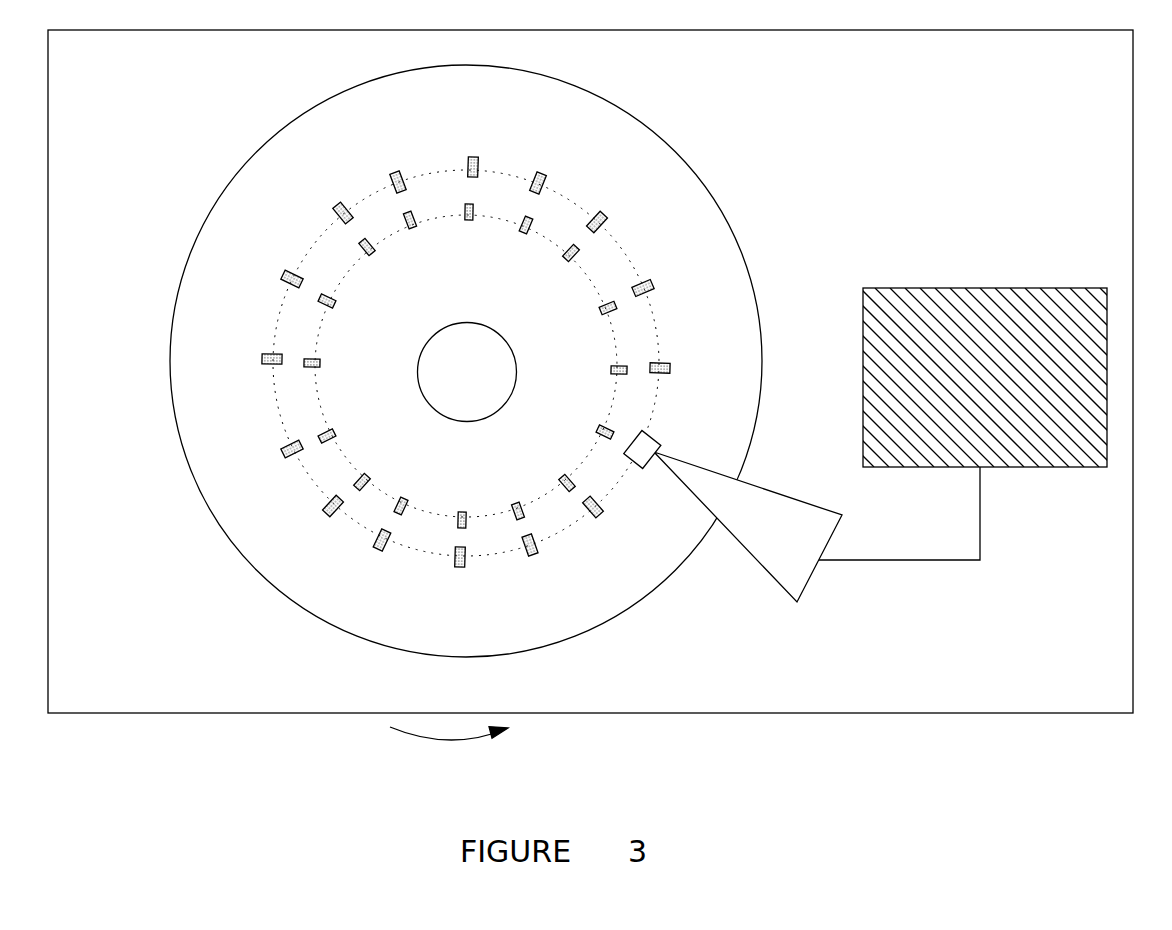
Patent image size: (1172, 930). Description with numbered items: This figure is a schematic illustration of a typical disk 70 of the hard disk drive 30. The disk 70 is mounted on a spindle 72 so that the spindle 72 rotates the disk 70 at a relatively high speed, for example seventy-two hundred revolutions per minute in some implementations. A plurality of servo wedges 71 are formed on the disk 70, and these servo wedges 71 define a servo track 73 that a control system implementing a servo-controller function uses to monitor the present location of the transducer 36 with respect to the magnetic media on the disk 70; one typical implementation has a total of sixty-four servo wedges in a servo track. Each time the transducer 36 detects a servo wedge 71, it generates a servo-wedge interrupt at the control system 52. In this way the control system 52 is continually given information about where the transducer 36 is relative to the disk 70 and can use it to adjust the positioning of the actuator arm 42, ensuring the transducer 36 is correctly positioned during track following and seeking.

The hard disk drive 30 is at (757, 121).
The disk 70 is at (276, 134).
The spindle 72 is at (487, 322).
The servo track 73 is at (273, 323).
The servo wedges 71 is at (285, 442).
The transducer 36 is at (664, 428).
The actuator arm 42 is at (780, 487).
The control system 52 is at (993, 283).